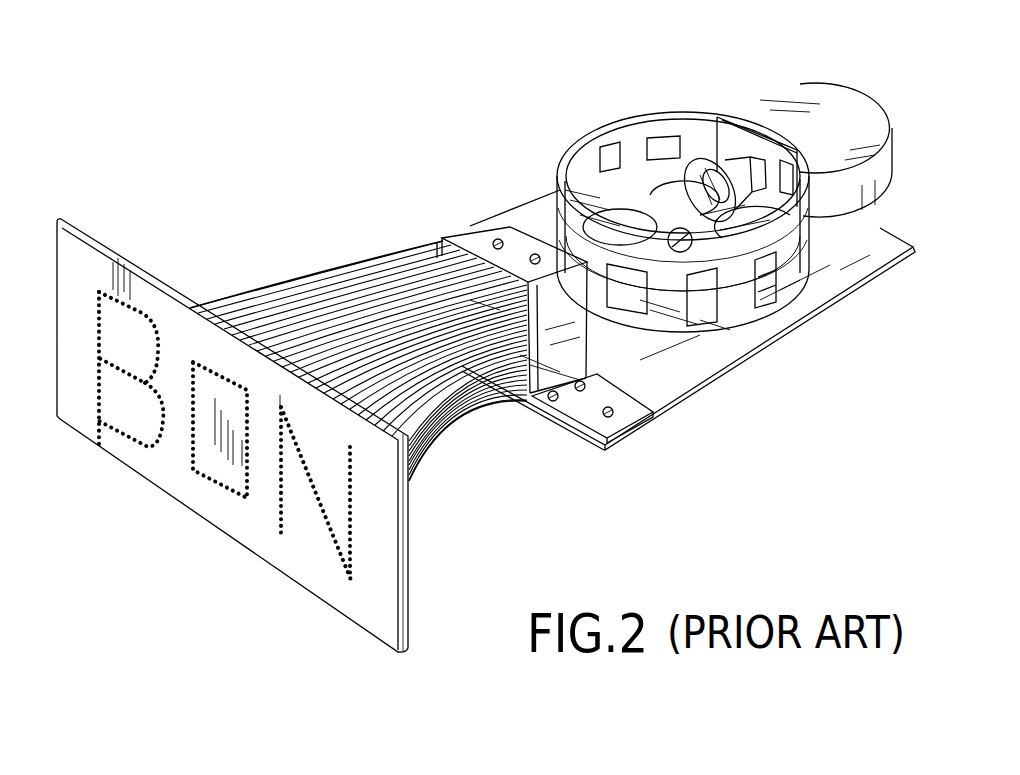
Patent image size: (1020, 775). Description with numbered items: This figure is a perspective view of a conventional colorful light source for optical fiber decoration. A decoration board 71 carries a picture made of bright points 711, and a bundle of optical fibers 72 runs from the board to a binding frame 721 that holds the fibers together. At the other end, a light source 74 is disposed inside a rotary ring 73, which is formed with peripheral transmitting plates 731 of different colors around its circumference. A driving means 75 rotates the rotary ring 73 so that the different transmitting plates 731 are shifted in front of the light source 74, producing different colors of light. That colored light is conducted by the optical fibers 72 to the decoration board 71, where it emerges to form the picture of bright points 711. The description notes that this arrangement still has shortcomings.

The decoration board 71 is at (148, 292).
The bright points of picture 711 is at (100, 282).
The optical fibers 72 is at (293, 310).
The binding frame 721 is at (477, 247).
The rotary ring 73 is at (716, 228).
The transmitting plates 731 is at (703, 300).
The light source 74 is at (690, 180).
The driving means 75 is at (820, 108).